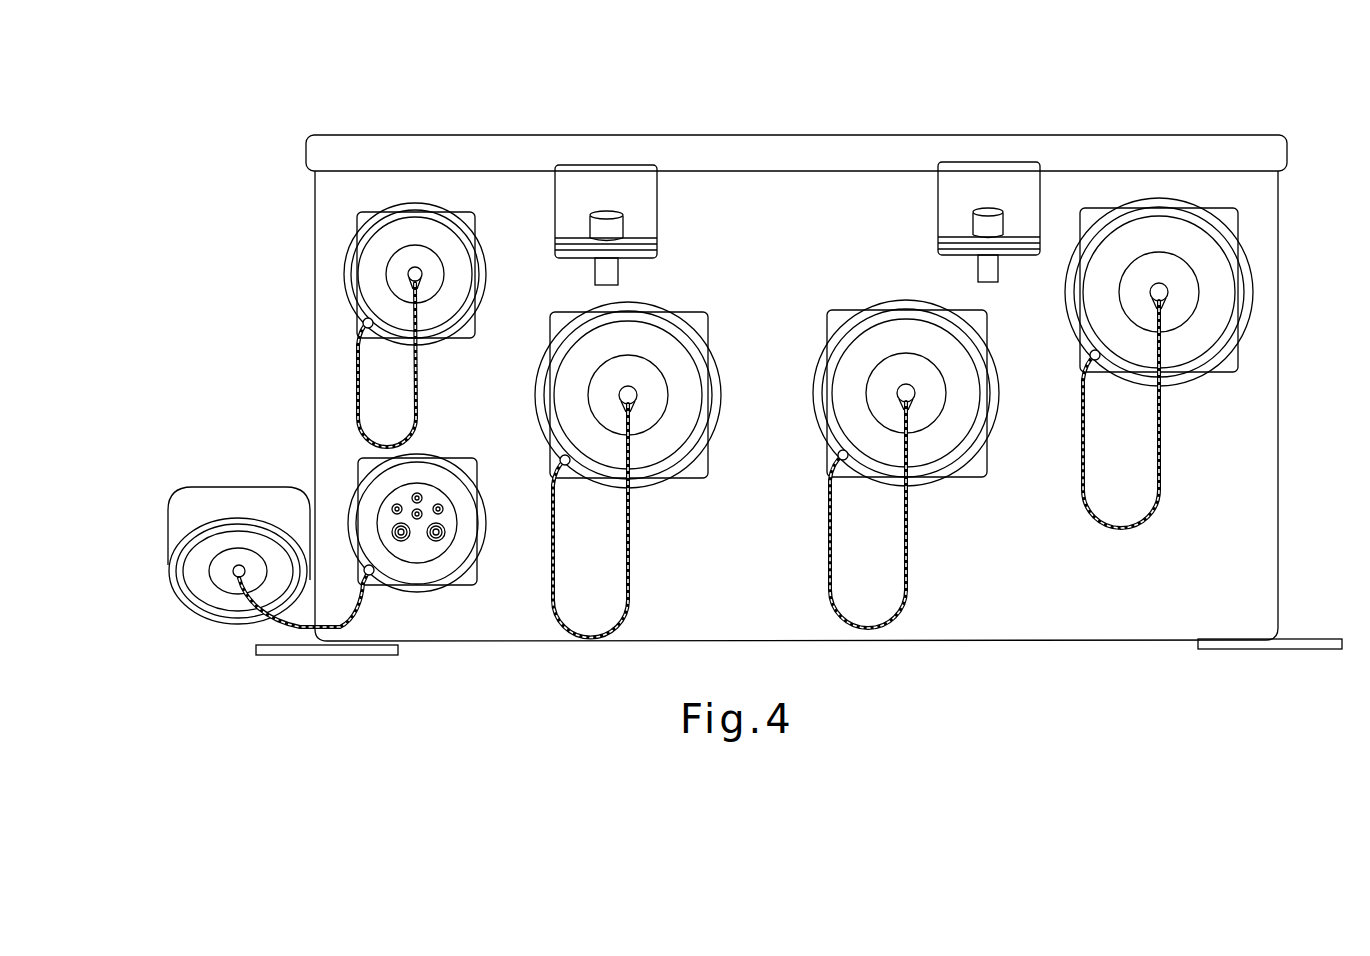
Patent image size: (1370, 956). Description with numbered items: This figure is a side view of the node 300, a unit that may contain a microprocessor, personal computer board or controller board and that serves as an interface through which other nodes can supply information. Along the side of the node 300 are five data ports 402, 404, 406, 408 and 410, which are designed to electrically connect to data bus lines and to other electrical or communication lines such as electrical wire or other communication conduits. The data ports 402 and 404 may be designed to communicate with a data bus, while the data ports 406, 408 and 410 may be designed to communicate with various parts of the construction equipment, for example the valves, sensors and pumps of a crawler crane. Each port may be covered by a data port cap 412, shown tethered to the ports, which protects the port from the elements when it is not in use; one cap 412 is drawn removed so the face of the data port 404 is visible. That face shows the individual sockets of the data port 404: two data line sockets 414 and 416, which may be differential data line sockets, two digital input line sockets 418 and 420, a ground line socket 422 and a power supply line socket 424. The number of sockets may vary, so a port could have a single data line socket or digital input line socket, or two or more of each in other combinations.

The node 300 is at (853, 195).
The data port 402 is at (355, 225).
The data port 404 is at (360, 470).
The data port 406 is at (550, 327).
The data port 408 is at (843, 310).
The data port 410 is at (1238, 228).
The data port cap 412 is at (415, 248).
The data line socket 414 is at (417, 493).
The data line socket 416 is at (422, 511).
The digital input line socket 418 is at (392, 509).
The digital input line socket 420 is at (443, 509).
The ground line socket 422 is at (401, 541).
The power supply line socket 424 is at (445, 533).